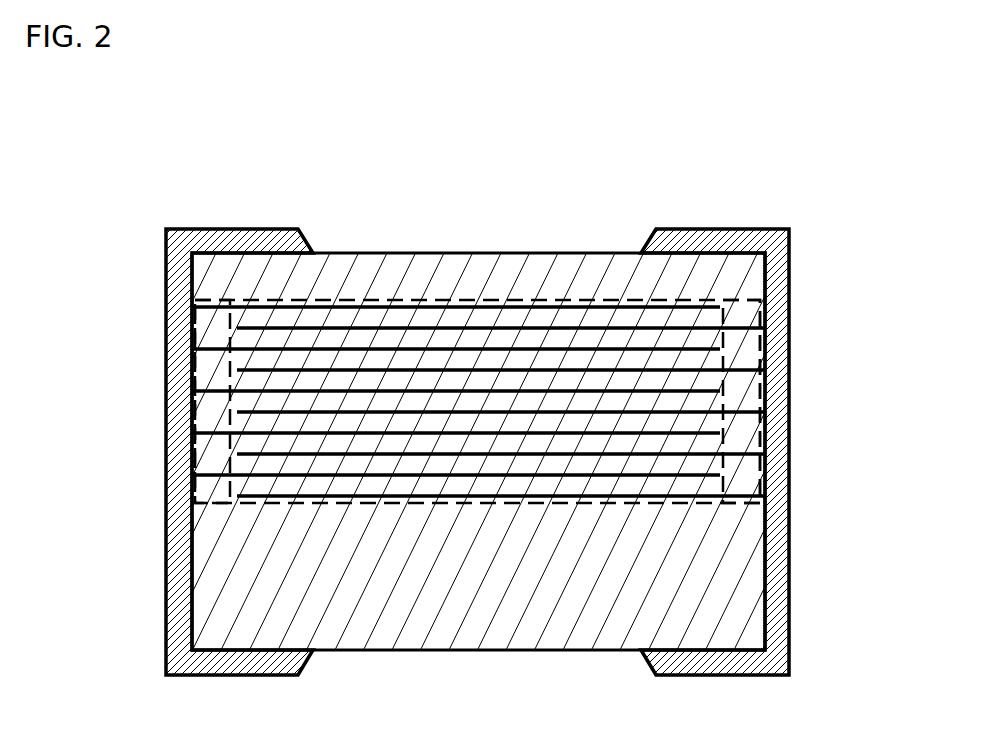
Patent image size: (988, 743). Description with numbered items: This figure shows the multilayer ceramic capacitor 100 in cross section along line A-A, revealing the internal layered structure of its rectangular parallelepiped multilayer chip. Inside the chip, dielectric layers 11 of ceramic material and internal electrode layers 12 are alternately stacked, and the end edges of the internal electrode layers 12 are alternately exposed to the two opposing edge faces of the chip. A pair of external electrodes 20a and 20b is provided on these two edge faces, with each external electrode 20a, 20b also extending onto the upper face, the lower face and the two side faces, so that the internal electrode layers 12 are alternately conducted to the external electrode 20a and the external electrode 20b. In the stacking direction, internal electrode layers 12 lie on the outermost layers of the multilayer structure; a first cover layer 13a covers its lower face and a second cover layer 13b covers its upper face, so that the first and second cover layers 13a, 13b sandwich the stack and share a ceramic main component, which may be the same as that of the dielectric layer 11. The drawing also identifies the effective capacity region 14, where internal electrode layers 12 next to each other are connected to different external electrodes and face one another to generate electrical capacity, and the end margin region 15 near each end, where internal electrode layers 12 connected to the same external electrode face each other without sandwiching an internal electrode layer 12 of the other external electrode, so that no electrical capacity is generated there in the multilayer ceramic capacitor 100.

The multilayer ceramic capacitor 100 is at (693, 173).
The dielectric layer 11 is at (585, 483).
The internal electrode layer 12 is at (470, 455).
The first cover layer 13a is at (393, 620).
The second cover layer 13b is at (378, 270).
The effective capacity region 14 is at (502, 300).
The end margin region 15 is at (216, 300).
The external electrode 20a is at (211, 417).
The external electrode 20b is at (737, 418).